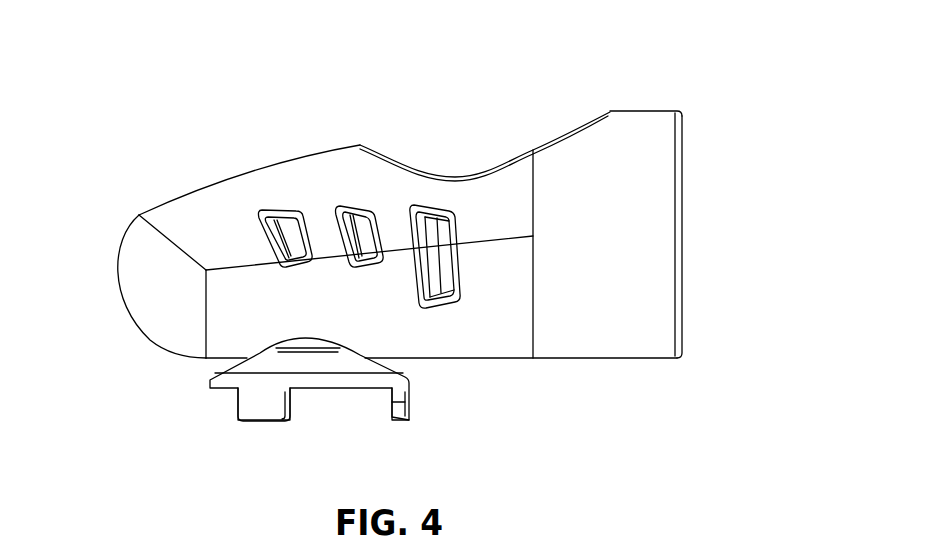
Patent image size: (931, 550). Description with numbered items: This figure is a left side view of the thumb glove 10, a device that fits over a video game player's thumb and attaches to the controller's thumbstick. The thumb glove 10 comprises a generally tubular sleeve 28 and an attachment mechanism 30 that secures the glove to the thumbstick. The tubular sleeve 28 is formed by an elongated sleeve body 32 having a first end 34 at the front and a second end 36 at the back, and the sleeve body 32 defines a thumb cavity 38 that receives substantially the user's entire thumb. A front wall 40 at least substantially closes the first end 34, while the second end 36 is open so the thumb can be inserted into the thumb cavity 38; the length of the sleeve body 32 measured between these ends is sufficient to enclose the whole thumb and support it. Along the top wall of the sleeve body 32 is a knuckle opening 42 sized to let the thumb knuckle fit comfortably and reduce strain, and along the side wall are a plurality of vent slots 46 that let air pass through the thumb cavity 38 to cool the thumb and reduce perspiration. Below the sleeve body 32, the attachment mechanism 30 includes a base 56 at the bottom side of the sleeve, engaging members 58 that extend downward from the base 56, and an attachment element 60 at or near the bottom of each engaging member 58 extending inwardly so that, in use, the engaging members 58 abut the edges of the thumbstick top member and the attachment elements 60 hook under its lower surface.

The thumb glove 10 is at (223, 113).
The tubular sleeve 28 is at (627, 185).
The attachment mechanism 30 is at (190, 398).
The sleeve body 32 is at (473, 337).
The first end 34 is at (120, 195).
The second end 36 is at (684, 98).
The thumb cavity 38 is at (693, 231).
The front wall 40 is at (143, 272).
The knuckle opening 42 is at (440, 160).
The vent slots 46 is at (277, 222).
The base 56 is at (327, 363).
The engaging members 58 is at (255, 405).
The attachment element 60 is at (387, 415).